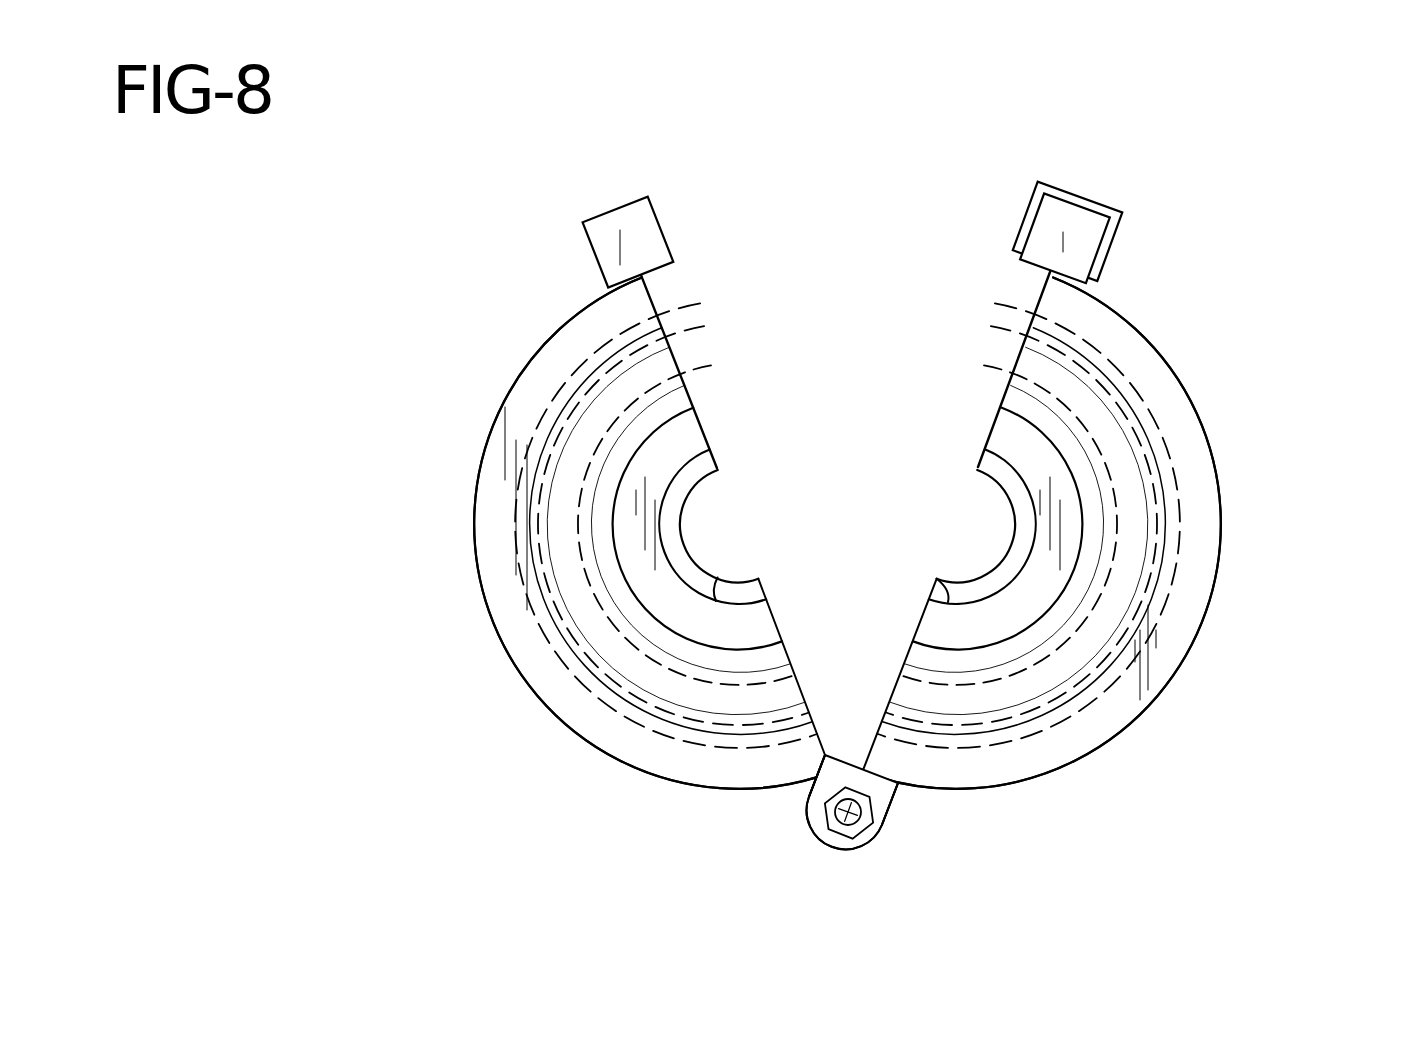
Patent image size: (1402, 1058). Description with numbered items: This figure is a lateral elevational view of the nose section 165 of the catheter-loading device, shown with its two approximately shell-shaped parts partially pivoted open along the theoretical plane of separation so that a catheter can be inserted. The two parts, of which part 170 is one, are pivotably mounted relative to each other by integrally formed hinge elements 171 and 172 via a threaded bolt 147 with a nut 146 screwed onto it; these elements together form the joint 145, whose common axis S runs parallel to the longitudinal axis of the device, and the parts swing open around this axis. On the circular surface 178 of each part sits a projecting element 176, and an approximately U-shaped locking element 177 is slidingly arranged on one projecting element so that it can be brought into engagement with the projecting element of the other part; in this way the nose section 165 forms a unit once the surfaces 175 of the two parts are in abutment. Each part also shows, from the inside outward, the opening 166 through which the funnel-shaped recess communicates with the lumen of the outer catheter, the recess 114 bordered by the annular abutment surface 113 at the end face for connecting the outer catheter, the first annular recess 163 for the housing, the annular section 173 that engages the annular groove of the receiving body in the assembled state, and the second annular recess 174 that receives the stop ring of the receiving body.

The nose section 165 is at (476, 239).
The part 170 is at (1152, 734).
The circular surface 178 is at (1186, 666).
The second annular recess 174 is at (993, 304).
The annular section 173 is at (989, 328).
The first annular recess 163 is at (982, 366).
The annular abutment surface 113 is at (982, 460).
The opening 166 is at (1006, 553).
The recess 114 is at (936, 580).
The surface 175 is at (972, 426).
The projecting element 176 is at (1108, 257).
The locking element 177 is at (1082, 194).
The joint 145 is at (775, 833).
The nut 146 is at (885, 828).
The threaded bolt 147 is at (858, 832).
The hinge element 171 is at (893, 788).
The hinge element 172 is at (806, 790).
The common axis S is at (811, 826).